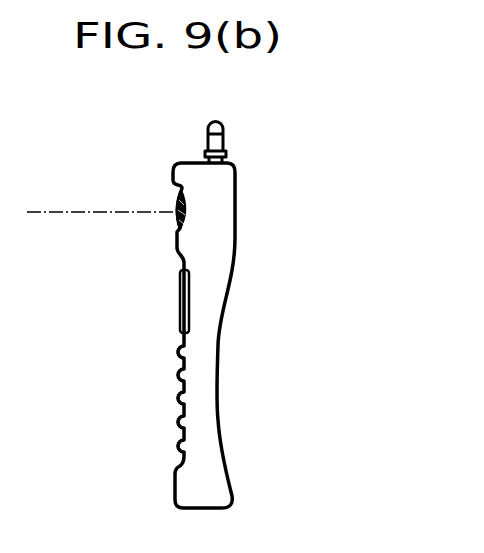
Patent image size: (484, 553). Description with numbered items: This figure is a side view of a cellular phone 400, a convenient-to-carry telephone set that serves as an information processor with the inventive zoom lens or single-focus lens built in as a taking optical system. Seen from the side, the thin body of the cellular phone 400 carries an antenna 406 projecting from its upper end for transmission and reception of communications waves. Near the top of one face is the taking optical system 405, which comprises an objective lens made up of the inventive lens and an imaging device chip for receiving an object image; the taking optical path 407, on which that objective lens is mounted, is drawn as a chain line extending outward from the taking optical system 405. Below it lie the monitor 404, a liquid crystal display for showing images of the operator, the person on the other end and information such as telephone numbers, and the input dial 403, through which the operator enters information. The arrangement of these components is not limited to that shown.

The cellular phone 400 is at (278, 343).
The input dial 403 is at (178, 421).
The monitor 404 is at (180, 303).
The taking optical system 405 is at (177, 213).
The antenna 406 is at (224, 139).
The taking optical path 407 is at (67, 212).